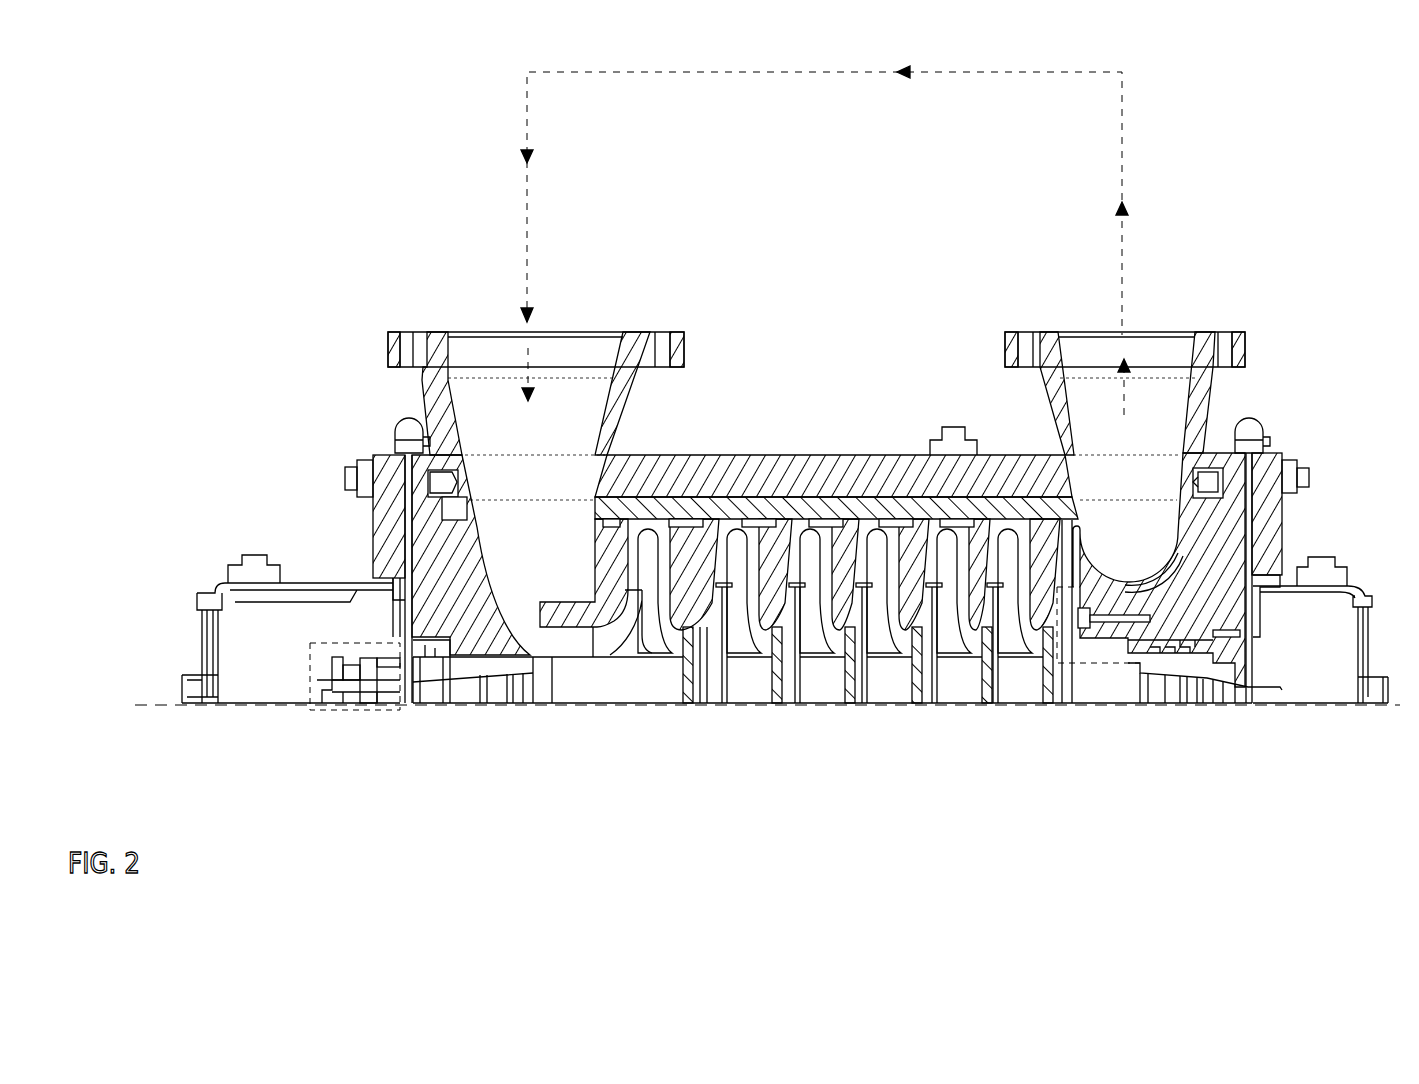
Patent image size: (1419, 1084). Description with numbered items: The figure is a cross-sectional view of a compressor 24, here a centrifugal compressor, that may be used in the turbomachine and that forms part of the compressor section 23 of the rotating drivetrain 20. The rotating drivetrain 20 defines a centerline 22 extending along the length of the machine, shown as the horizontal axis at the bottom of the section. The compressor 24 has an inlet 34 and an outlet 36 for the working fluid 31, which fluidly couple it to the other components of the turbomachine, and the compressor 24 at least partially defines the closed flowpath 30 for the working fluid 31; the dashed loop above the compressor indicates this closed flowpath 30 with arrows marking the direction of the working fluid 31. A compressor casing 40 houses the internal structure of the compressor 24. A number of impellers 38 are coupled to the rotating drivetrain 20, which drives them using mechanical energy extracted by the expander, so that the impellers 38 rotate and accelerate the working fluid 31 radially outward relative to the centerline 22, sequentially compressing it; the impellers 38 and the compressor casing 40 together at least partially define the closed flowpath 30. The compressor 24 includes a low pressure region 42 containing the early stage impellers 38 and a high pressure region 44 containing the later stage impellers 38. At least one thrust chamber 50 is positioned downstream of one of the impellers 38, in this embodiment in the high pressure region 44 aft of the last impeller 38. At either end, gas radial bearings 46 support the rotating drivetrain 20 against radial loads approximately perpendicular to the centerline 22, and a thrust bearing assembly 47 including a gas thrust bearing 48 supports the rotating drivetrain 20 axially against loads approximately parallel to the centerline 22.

The rotating drivetrain 20 is at (570, 702).
The centerline 22 is at (1412, 708).
The compressor section 23 is at (400, 826).
The compressor 24 is at (773, 250).
The closed flowpath 30 is at (1148, 140).
The working fluid 31 is at (647, 72).
The inlet 34 is at (440, 297).
The outlet 36 is at (1040, 318).
The impellers 38 is at (710, 695).
The compressor casing 40 is at (828, 455).
The low pressure region 42 is at (722, 780).
The high pressure region 44 is at (1003, 750).
The gas radial bearing 46 is at (430, 690).
The thrust bearing assembly 47 is at (290, 690).
The gas thrust bearing 48 is at (368, 673).
The thrust chamber 50 is at (1103, 680).